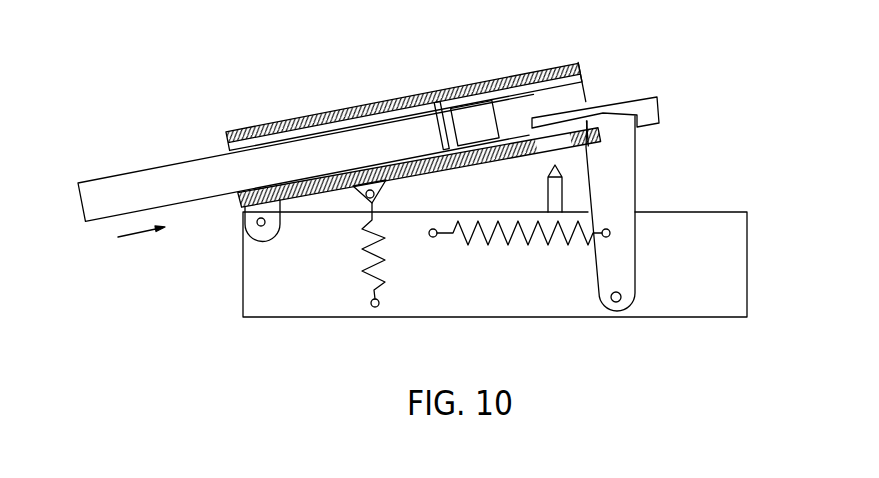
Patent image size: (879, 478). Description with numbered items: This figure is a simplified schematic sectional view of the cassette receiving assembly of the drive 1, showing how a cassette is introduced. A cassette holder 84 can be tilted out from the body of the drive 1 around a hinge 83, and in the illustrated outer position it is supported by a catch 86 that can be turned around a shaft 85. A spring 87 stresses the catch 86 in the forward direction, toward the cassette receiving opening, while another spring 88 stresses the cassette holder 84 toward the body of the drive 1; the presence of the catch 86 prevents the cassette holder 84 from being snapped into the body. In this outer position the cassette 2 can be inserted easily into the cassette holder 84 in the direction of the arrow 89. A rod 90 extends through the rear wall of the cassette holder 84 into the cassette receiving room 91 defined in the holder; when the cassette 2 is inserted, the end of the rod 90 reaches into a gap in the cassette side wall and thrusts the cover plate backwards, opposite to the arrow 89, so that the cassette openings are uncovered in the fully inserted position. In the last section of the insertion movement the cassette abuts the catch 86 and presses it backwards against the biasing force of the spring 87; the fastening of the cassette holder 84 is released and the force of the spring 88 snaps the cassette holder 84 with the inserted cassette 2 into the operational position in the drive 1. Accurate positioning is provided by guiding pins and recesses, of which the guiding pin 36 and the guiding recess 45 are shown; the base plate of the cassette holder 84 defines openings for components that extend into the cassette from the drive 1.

The drive 1 is at (700, 303).
The cassette 2 is at (120, 191).
The guiding pin 36 is at (548, 190).
The guiding recess 45 is at (445, 118).
The hinge 83 is at (258, 226).
The cassette holder 84 is at (553, 68).
The shaft 85 is at (622, 303).
The catch 86 is at (621, 184).
The spring 87 is at (533, 240).
The spring 88 is at (362, 263).
The arrow 89 is at (132, 237).
The rod 90 is at (636, 97).
The cassette receiving room 91 is at (510, 100).